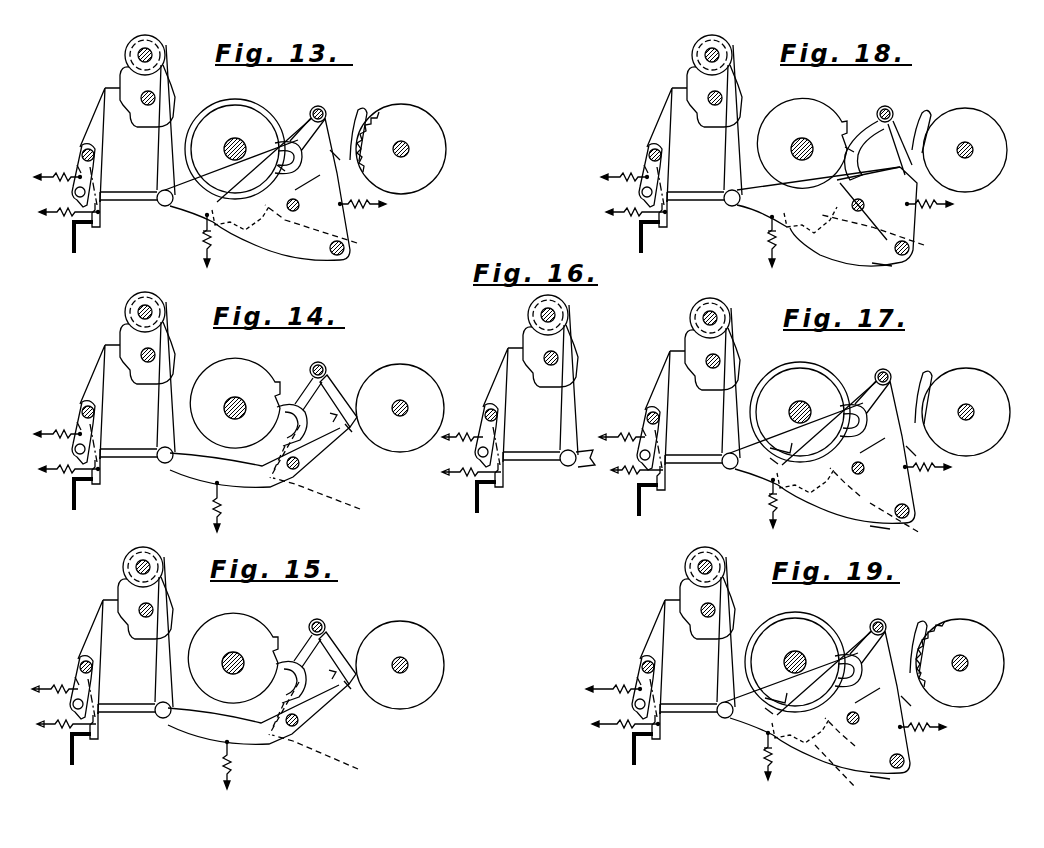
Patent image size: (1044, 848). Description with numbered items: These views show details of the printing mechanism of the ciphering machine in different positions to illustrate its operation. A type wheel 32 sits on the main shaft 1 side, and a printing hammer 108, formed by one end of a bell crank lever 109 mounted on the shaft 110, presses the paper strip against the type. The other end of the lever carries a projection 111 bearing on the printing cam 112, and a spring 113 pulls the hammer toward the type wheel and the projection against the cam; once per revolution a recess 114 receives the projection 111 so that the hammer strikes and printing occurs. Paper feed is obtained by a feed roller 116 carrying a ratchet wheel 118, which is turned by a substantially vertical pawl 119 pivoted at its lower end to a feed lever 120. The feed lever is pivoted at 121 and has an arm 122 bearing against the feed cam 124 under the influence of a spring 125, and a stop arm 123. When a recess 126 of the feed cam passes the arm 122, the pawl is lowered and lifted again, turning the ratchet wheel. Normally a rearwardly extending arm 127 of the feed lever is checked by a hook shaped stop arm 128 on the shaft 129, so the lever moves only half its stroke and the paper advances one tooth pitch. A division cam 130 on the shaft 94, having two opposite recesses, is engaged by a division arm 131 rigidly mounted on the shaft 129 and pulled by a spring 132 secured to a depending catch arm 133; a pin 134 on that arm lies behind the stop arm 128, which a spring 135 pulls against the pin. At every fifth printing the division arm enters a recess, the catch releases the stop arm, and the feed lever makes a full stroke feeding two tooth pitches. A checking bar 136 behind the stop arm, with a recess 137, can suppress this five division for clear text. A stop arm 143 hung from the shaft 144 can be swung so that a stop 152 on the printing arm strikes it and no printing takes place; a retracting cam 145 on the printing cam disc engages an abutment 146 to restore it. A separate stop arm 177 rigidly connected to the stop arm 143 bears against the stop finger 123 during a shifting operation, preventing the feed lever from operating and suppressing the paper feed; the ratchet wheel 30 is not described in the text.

In FIG. 13, the main shaft 1 is at (232, 119).
In FIG. 18, the main shaft 1 is at (799, 119).
In FIG. 14, the main shaft 1 is at (232, 377).
In FIG. 17, the main shaft 1 is at (800, 380).
In FIG. 15, the main shaft 1 is at (231, 631).
In FIG. 19, the main shaft 1 is at (796, 630).
In FIG. 13, the ratchet wheel 30 is at (401, 136).
In FIG. 18, the ratchet wheel 30 is at (965, 135).
In FIG. 14, the ratchet wheel 30 is at (400, 393).
In FIG. 17, the ratchet wheel 30 is at (966, 397).
In FIG. 15, the ratchet wheel 30 is at (400, 648).
In FIG. 19, the ratchet wheel 30 is at (960, 647).
In FIG. 13, the type wheel 32 is at (423, 117).
In FIG. 18, the type wheel 32 is at (991, 118).
In FIG. 14, the type wheel 32 is at (413, 375).
In FIG. 17, the type wheel 32 is at (962, 379).
In FIG. 15, the type wheel 32 is at (418, 630).
In FIG. 19, the type wheel 32 is at (955, 629).
In FIG. 13, the shaft 94 is at (171, 90).
In FIG. 18, the shaft 94 is at (738, 90).
In FIG. 14, the shaft 94 is at (171, 347).
In FIG. 16, the shaft 94 is at (573, 357).
In FIG. 17, the shaft 94 is at (734, 353).
In FIG. 15, the shaft 94 is at (167, 602).
In FIG. 19, the shaft 94 is at (726, 602).
In FIG. 13, the printing hammer 108 is at (380, 119).
In FIG. 18, the printing hammer 108 is at (932, 115).
In FIG. 17, the printing hammer 108 is at (932, 381).
In FIG. 19, the printing hammer 108 is at (925, 631).
In FIG. 13, the bell crank lever 109 is at (358, 201).
In FIG. 18, the bell crank lever 109 is at (937, 281).
In FIG. 17, the bell crank lever 109 is at (927, 543).
In FIG. 19, the bell crank lever 109 is at (895, 790).
In FIG. 13, the shaft 110 is at (376, 263).
In FIG. 18, the shaft 110 is at (942, 264).
In FIG. 17, the shaft 110 is at (940, 526).
In FIG. 19, the shaft 110 is at (939, 775).
In FIG. 13, the projection 111 is at (209, 226).
In FIG. 18, the projection 111 is at (776, 226).
In FIG. 17, the projection 111 is at (776, 490).
In FIG. 19, the projection 111 is at (769, 747).
In FIG. 13, the printing cam 112 is at (197, 149).
In FIG. 17, the printing cam 112 is at (762, 412).
In FIG. 19, the printing cam 112 is at (755, 662).
In FIG. 18, the spring 113 is at (913, 196).
In FIG. 17, the spring 113 is at (922, 470).
In FIG. 19, the spring 113 is at (921, 721).
In FIG. 13, the recess 114 is at (357, 119).
In FIG. 17, the recess 114 is at (783, 395).
In FIG. 19, the recess 114 is at (779, 645).
In FIG. 13, the feed roller 116 is at (99, 54).
In FIG. 18, the feed roller 116 is at (669, 54).
In FIG. 14, the feed roller 116 is at (99, 311).
In FIG. 16, the feed roller 116 is at (514, 315).
In FIG. 17, the feed roller 116 is at (677, 314).
In FIG. 15, the feed roller 116 is at (98, 566).
In FIG. 19, the feed roller 116 is at (656, 567).
In FIG. 13, the ratchet wheel 118 is at (174, 42).
In FIG. 18, the ratchet wheel 118 is at (741, 42).
In FIG. 14, the ratchet wheel 118 is at (174, 299).
In FIG. 16, the ratchet wheel 118 is at (575, 307).
In FIG. 17, the ratchet wheel 118 is at (736, 306).
In FIG. 15, the ratchet wheel 118 is at (169, 555).
In FIG. 19, the ratchet wheel 118 is at (729, 560).
In FIG. 13, the pawl 119 is at (183, 120).
In FIG. 18, the pawl 119 is at (750, 120).
In FIG. 14, the pawl 119 is at (183, 377).
In FIG. 16, the pawl 119 is at (585, 380).
In FIG. 17, the pawl 119 is at (746, 383).
In FIG. 15, the pawl 119 is at (179, 632).
In FIG. 19, the pawl 119 is at (738, 632).
In FIG. 13, the feed lever 120 is at (223, 185).
In FIG. 18, the feed lever 120 is at (807, 198).
In FIG. 14, the feed lever 120 is at (249, 458).
In FIG. 17, the feed lever 120 is at (791, 451).
In FIG. 15, the feed lever 120 is at (253, 722).
In FIG. 19, the feed lever 120 is at (783, 709).
In FIG. 13, the pivot 121 is at (354, 227).
In FIG. 18, the pivot 121 is at (921, 228).
In FIG. 14, the pivot 121 is at (337, 476).
In FIG. 17, the pivot 121 is at (918, 497).
In FIG. 15, the pivot 121 is at (335, 735).
In FIG. 19, the pivot 121 is at (917, 747).
In FIG. 13, the arm 122 is at (300, 126).
In FIG. 18, the arm 122 is at (869, 129).
In FIG. 14, the arm 122 is at (301, 390).
In FIG. 17, the arm 122 is at (865, 387).
In FIG. 15, the arm 122 is at (300, 645).
In FIG. 19, the arm 122 is at (860, 637).
In FIG. 13, the stop arm 123 is at (380, 205).
In FIG. 18, the stop arm 123 is at (948, 203).
In FIG. 14, the stop arm 123 is at (366, 447).
In FIG. 17, the stop arm 123 is at (944, 476).
In FIG. 15, the stop arm 123 is at (364, 702).
In FIG. 19, the stop arm 123 is at (943, 731).
In FIG. 13, the feed cam 124 is at (200, 149).
In FIG. 18, the feed cam 124 is at (764, 143).
In FIG. 14, the feed cam 124 is at (198, 403).
In FIG. 17, the feed cam 124 is at (765, 412).
In FIG. 15, the feed cam 124 is at (195, 658).
In FIG. 19, the feed cam 124 is at (758, 662).
In FIG. 13, the spring 125 is at (179, 248).
In FIG. 18, the spring 125 is at (745, 249).
In FIG. 14, the spring 125 is at (186, 507).
In FIG. 17, the spring 125 is at (748, 512).
In FIG. 15, the spring 125 is at (194, 765).
In FIG. 19, the spring 125 is at (740, 771).
In FIG. 13, the recess 126 is at (140, 85).
In FIG. 18, the recess 126 is at (793, 142).
In FIG. 14, the recess 126 is at (223, 415).
In FIG. 16, the recess 126 is at (571, 472).
In FIG. 17, the recess 126 is at (791, 403).
In FIG. 15, the recess 126 is at (225, 653).
In FIG. 19, the recess 126 is at (783, 653).
In FIG. 13, the rearwardly extending arm 127 is at (128, 211).
In FIG. 18, the rearwardly extending arm 127 is at (695, 211).
In FIG. 14, the rearwardly extending arm 127 is at (128, 470).
In FIG. 16, the rearwardly extending arm 127 is at (527, 473).
In FIG. 17, the rearwardly extending arm 127 is at (689, 475).
In FIG. 15, the rearwardly extending arm 127 is at (126, 727).
In FIG. 19, the rearwardly extending arm 127 is at (688, 724).
In FIG. 13, the stop arm 128 is at (115, 185).
In FIG. 18, the stop arm 128 is at (682, 185).
In FIG. 14, the stop arm 128 is at (116, 443).
In FIG. 16, the stop arm 128 is at (518, 446).
In FIG. 17, the stop arm 128 is at (680, 449).
In FIG. 15, the stop arm 128 is at (113, 698).
In FIG. 19, the stop arm 128 is at (673, 698).
In FIG. 13, the shaft 129 is at (64, 159).
In FIG. 18, the shaft 129 is at (634, 159).
In FIG. 14, the shaft 129 is at (64, 416).
In FIG. 16, the shaft 129 is at (478, 425).
In FIG. 17, the shaft 129 is at (640, 420).
In FIG. 15, the shaft 129 is at (63, 671).
In FIG. 19, the shaft 129 is at (621, 670).
In FIG. 13, the division cam 130 is at (104, 94).
In FIG. 18, the division cam 130 is at (674, 94).
In FIG. 14, the division cam 130 is at (104, 351).
In FIG. 16, the division cam 130 is at (519, 355).
In FIG. 17, the division cam 130 is at (682, 352).
In FIG. 15, the division cam 130 is at (103, 606).
In FIG. 19, the division cam 130 is at (661, 604).
In FIG. 13, the division arm 131 is at (76, 143).
In FIG. 18, the division arm 131 is at (647, 143).
In FIG. 14, the division arm 131 is at (76, 400).
In FIG. 16, the division arm 131 is at (492, 405).
In FIG. 17, the division arm 131 is at (653, 403).
In FIG. 15, the division arm 131 is at (75, 655).
In FIG. 19, the division arm 131 is at (633, 654).
In FIG. 13, the spring 132 is at (57, 168).
In FIG. 18, the spring 132 is at (625, 168).
In FIG. 14, the spring 132 is at (57, 425).
In FIG. 19, the spring 132 is at (614, 680).
In FIG. 13, the catch arm 133 is at (57, 154).
In FIG. 18, the catch arm 133 is at (627, 154).
In FIG. 14, the catch arm 133 is at (57, 411).
In FIG. 17, the catch arm 133 is at (632, 415).
In FIG. 15, the catch arm 133 is at (56, 666).
In FIG. 19, the catch arm 133 is at (614, 665).
In FIG. 13, the pin 134 is at (59, 192).
In FIG. 18, the pin 134 is at (629, 192).
In FIG. 14, the pin 134 is at (59, 449).
In FIG. 16, the pin 134 is at (483, 452).
In FIG. 17, the pin 134 is at (645, 455).
In FIG. 15, the pin 134 is at (58, 708).
In FIG. 19, the pin 134 is at (616, 708).
In FIG. 13, the spring 135 is at (66, 222).
In FIG. 18, the spring 135 is at (636, 222).
In FIG. 14, the spring 135 is at (66, 479).
In FIG. 19, the spring 135 is at (623, 733).
In FIG. 13, the checking bar 136 is at (63, 240).
In FIG. 18, the checking bar 136 is at (674, 229).
In FIG. 14, the checking bar 136 is at (63, 497).
In FIG. 16, the checking bar 136 is at (504, 499).
In FIG. 17, the checking bar 136 is at (626, 503).
In FIG. 15, the checking bar 136 is at (62, 752).
In FIG. 19, the checking bar 136 is at (620, 752).
In FIG. 13, the recess 137 is at (115, 225).
In FIG. 14, the recess 137 is at (115, 483).
In FIG. 15, the recess 137 is at (113, 741).
In FIG. 19, the recess 137 is at (673, 738).
In FIG. 13, the stop arm 143 is at (343, 238).
In FIG. 18, the stop arm 143 is at (906, 245).
In FIG. 14, the stop arm 143 is at (330, 496).
In FIG. 17, the stop arm 143 is at (910, 522).
In FIG. 15, the stop arm 143 is at (328, 755).
In FIG. 19, the stop arm 143 is at (845, 761).
In FIG. 13, the shaft 144 is at (332, 100).
In FIG. 18, the shaft 144 is at (899, 100).
In FIG. 14, the shaft 144 is at (332, 356).
In FIG. 17, the shaft 144 is at (897, 361).
In FIG. 15, the shaft 144 is at (332, 611).
In FIG. 19, the shaft 144 is at (891, 611).
In FIG. 13, the retracting cam 145 is at (261, 124).
In FIG. 17, the retracting cam 145 is at (728, 487).
In FIG. 19, the retracting cam 145 is at (740, 726).
In FIG. 13, the abutment 146 is at (317, 189).
In FIG. 18, the abutment 146 is at (890, 195).
In FIG. 14, the abutment 146 is at (270, 406).
In FIG. 17, the abutment 146 is at (881, 452).
In FIG. 15, the abutment 146 is at (327, 711).
In FIG. 19, the abutment 146 is at (880, 702).
In FIG. 13, the stop 152 is at (222, 241).
In FIG. 18, the stop 152 is at (788, 242).
In FIG. 17, the stop 152 is at (787, 506).
In FIG. 19, the stop 152 is at (777, 764).
In FIG. 18, the stop arm 177 is at (938, 121).
In FIG. 14, the stop arm 177 is at (353, 381).
In FIG. 17, the stop arm 177 is at (946, 452).
In FIG. 15, the stop arm 177 is at (352, 636).
In FIG. 19, the stop arm 177 is at (945, 702).